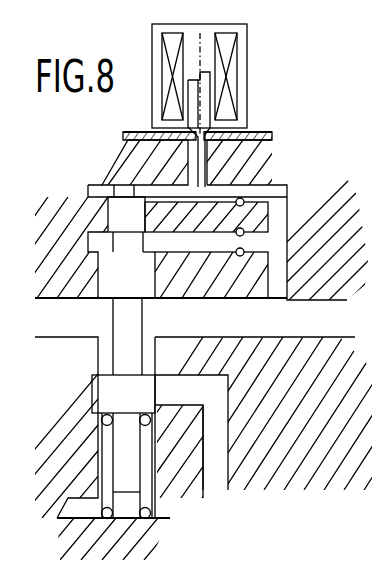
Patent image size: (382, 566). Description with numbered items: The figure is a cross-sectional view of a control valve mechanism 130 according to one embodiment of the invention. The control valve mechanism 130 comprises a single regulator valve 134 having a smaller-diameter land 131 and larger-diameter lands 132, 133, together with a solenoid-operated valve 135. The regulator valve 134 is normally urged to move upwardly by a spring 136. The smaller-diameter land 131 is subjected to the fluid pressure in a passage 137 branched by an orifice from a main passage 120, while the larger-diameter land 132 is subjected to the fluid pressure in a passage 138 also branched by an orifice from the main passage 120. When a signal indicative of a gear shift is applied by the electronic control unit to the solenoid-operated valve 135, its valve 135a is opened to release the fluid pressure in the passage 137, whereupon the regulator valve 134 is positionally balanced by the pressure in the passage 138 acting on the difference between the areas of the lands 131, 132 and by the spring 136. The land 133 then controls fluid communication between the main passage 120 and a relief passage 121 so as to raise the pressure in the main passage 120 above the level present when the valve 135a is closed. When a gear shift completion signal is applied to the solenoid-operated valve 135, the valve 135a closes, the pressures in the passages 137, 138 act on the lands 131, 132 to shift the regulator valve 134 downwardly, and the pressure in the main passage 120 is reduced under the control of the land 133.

The main passage 120 is at (277, 320).
The relief passage 121 is at (220, 447).
The control valve mechanism 130 is at (288, 149).
The smaller-diameter land 131 is at (108, 214).
The larger-diameter land 132 is at (113, 270).
The larger-diameter land 133 is at (105, 395).
The regulator valve 134 is at (122, 340).
The solenoid-operated valve 135 is at (255, 49).
The valve 135a is at (205, 112).
The spring 136 is at (150, 513).
The passage 137 is at (162, 188).
The passage 138 is at (212, 238).